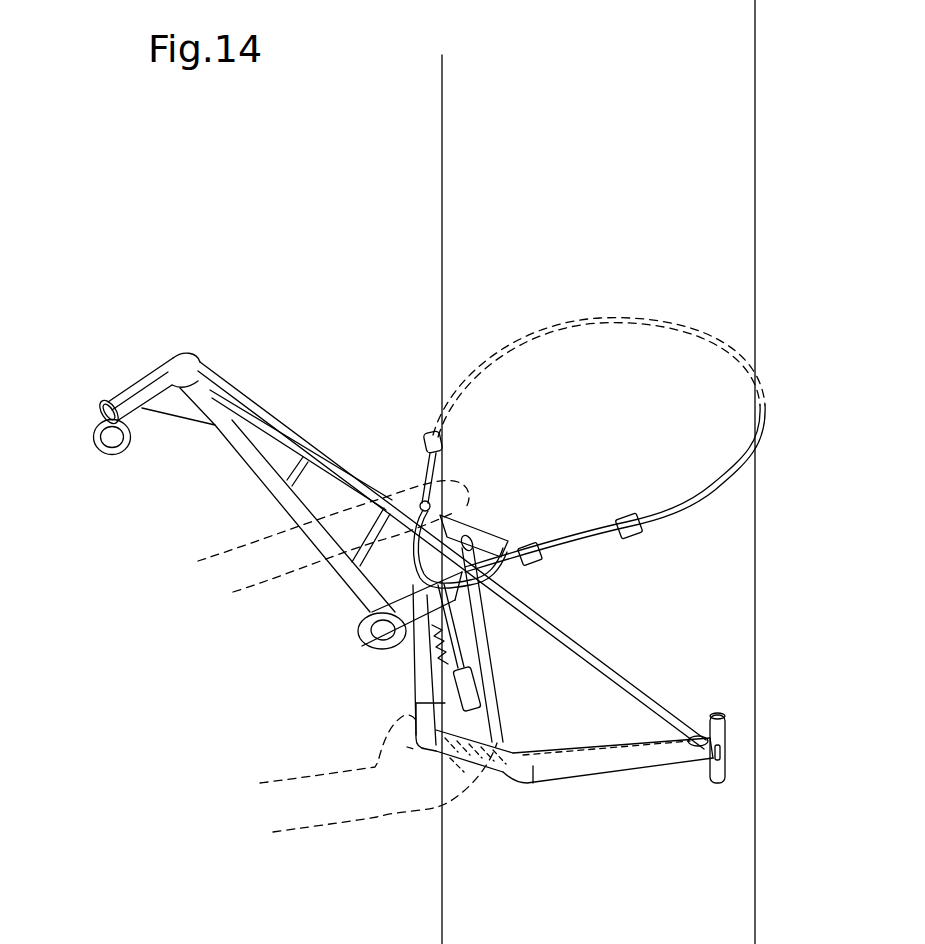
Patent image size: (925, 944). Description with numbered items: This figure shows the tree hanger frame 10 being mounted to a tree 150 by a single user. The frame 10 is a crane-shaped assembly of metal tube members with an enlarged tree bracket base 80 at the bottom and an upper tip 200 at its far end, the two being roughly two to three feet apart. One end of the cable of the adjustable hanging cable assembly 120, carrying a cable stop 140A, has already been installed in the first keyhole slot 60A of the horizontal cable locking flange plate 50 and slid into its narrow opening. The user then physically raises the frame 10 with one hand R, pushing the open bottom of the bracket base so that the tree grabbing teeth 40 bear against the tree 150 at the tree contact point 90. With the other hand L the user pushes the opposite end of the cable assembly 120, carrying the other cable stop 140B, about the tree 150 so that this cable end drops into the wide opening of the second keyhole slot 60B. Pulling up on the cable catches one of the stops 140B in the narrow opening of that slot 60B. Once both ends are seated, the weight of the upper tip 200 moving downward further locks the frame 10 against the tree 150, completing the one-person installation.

The tree hanger frame 10 is at (146, 252).
The upper tip 200 is at (104, 360).
The tree grabbing teeth 40 is at (508, 556).
The cable locking flange plate 50 is at (428, 498).
The keyhole slot 60A is at (508, 648).
The keyhole slot 60B is at (341, 612).
The tree bracket base 80 is at (580, 804).
The tree contact point 90 is at (508, 508).
The adjustable hanging cable assembly 120 is at (660, 445).
The cable stop 140A is at (584, 574).
The cable stop 140B is at (374, 399).
The tree 150 is at (654, 472).
The hand L is at (321, 536).
The hand R is at (383, 799).